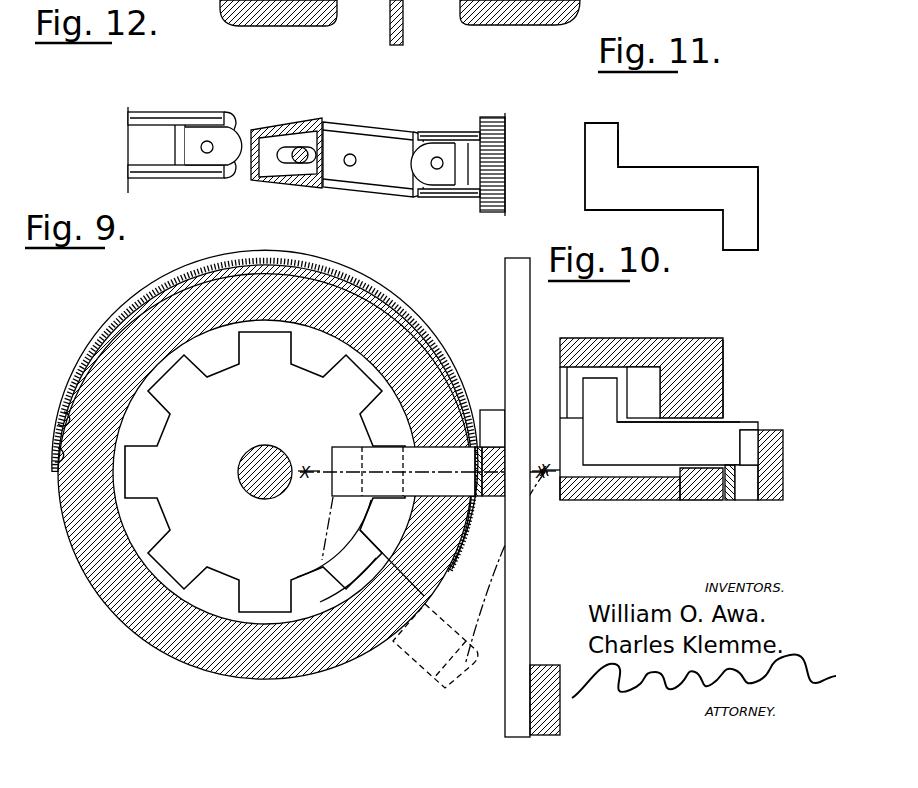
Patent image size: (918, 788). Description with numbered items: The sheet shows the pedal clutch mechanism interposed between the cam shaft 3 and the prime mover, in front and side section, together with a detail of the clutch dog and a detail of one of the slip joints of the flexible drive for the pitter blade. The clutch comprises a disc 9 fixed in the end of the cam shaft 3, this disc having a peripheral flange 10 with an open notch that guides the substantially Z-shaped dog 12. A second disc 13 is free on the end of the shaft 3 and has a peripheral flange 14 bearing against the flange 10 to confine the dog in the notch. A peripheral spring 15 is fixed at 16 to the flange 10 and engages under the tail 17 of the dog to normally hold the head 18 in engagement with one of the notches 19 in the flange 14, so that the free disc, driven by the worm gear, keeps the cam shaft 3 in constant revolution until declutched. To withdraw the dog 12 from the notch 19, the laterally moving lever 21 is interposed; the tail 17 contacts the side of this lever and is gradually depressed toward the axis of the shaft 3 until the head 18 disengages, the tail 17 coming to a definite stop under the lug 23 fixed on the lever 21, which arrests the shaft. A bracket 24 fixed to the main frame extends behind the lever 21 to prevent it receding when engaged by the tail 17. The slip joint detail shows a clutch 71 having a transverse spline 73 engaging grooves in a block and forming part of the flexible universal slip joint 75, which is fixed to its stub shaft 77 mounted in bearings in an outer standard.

In FIG. 9, the cam shaft 3 is at (273, 449).
In FIG. 10, the disc 9 is at (605, 500).
In FIG. 10, the peripheral flange 10 is at (705, 501).
In FIG. 9, the peripheral flange 10 is at (112, 608).
In FIG. 11, the dog 12 is at (683, 202).
In FIG. 10, the dog 12 is at (647, 455).
In FIG. 10, the disc 13 is at (612, 337).
In FIG. 9, the disc 13 is at (300, 565).
In FIG. 10, the peripheral flange 14 is at (723, 376).
In FIG. 10, the peripheral spring 15 is at (730, 501).
In FIG. 9, the peripheral spring 15 is at (352, 272).
In FIG. 9, the fixing point 16 is at (56, 441).
In FIG. 11, the tail 17 is at (753, 230).
In FIG. 10, the tail 17 is at (750, 490).
In FIG. 11, the head 18 is at (612, 149).
In FIG. 10, the head 18 is at (670, 421).
In FIG. 10, the notches 19 is at (643, 392).
In FIG. 9, the notches 19 is at (181, 556).
In FIG. 10, the lever 21 is at (783, 466).
In FIG. 9, the lever 21 is at (506, 361).
In FIG. 10, the lug 23 is at (751, 440).
In FIG. 9, the lug 23 is at (492, 420).
In FIG. 9, the bracket 24 is at (561, 718).
In FIG. 12, the clutch 71 is at (470, 130).
In FIG. 12, the transverse spline 73 is at (487, 207).
In FIG. 12, the flexible universal slip joint 75 is at (262, 128).
In FIG. 12, the stub shaft 77 is at (158, 118).